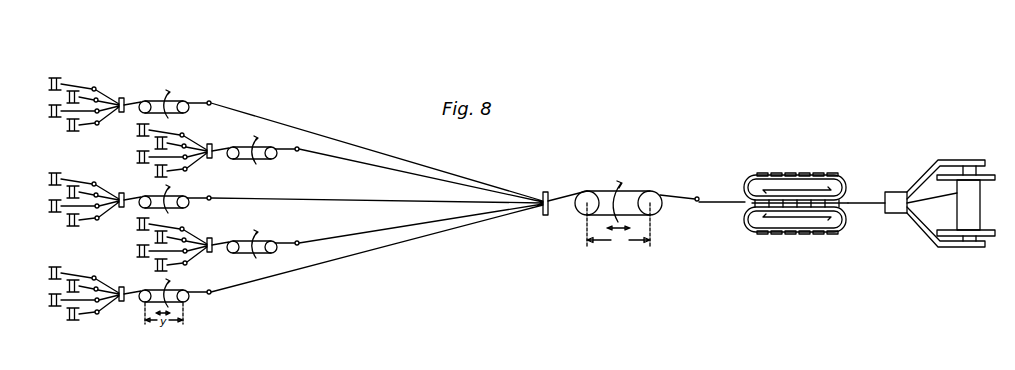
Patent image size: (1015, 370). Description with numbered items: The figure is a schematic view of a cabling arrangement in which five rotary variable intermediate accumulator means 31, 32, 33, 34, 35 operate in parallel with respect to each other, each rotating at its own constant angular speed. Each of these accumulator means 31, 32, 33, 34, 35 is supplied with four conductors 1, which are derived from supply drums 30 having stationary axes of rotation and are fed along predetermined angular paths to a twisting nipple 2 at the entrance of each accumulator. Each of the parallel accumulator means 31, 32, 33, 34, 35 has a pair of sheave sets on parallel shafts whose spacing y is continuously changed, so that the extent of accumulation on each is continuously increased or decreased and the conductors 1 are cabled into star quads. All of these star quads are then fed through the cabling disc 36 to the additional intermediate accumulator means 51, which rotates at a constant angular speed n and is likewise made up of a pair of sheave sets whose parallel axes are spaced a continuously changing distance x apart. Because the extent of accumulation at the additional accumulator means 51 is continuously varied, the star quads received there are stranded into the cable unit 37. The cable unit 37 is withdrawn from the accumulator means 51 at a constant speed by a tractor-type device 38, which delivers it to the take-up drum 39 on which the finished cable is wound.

The supply drums 30 is at (72, 90).
The conductors 1 is at (93, 91).
The twisting nipple 2 is at (122, 97).
The rotary variable intermediate accumulator means 31 is at (187, 111).
The rotary variable intermediate accumulator means 32 is at (261, 151).
The rotary variable intermediate accumulator means 33 is at (173, 200).
The rotary variable intermediate accumulator means 34 is at (261, 245).
The rotary variable intermediate accumulator means 35 is at (173, 294).
The cabling disc 36 is at (545, 190).
The additional intermediate accumulator means 51 is at (654, 193).
The cable unit 37 is at (716, 200).
The tractor-type device 38 is at (800, 185).
The take-up drum 39 is at (976, 205).